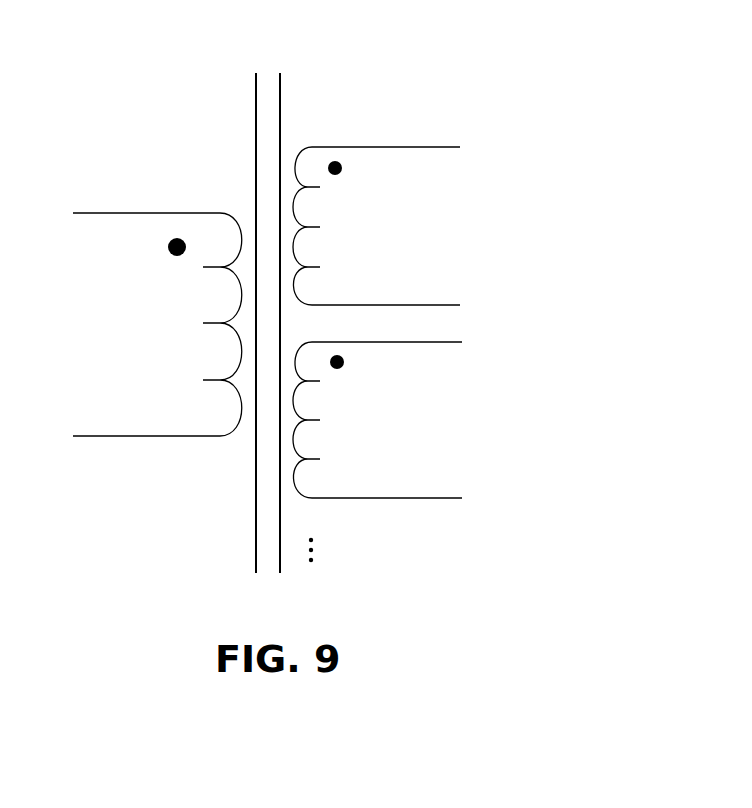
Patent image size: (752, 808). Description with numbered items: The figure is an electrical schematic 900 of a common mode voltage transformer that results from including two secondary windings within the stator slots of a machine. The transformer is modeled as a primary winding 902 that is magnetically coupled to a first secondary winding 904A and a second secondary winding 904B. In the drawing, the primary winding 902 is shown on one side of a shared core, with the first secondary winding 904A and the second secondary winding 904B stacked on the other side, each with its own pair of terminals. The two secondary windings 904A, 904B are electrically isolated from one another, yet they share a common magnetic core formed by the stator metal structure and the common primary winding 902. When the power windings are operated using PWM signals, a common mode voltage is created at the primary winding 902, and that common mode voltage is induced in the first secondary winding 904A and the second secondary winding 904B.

The electrical schematic 900 is at (449, 92).
The primary winding 902 is at (241, 222).
The first secondary winding 904A is at (293, 157).
The second secondary winding 904B is at (295, 488).